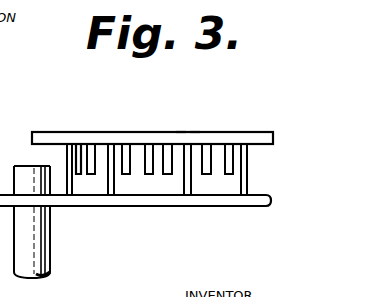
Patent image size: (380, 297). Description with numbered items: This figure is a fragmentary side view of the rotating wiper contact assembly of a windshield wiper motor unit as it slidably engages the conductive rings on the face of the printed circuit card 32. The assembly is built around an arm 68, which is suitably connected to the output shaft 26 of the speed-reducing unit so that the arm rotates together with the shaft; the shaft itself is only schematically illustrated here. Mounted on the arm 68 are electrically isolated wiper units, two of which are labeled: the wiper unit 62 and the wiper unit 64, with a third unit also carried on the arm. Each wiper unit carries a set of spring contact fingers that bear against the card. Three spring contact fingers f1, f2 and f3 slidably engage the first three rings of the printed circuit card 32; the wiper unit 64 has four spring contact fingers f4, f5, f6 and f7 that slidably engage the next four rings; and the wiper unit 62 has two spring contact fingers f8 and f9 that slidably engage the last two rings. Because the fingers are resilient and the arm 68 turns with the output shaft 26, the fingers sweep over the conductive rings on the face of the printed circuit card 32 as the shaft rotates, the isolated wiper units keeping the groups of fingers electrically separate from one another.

The output shaft 26 is at (49, 251).
The printed circuit card 32 is at (256, 132).
The wiper unit 62 is at (86, 186).
The wiper unit 64 is at (152, 185).
The arm 68 is at (255, 206).
The spring contact finger f1 is at (237, 132).
The spring contact finger f2 is at (221, 132).
The spring contact finger f3 is at (195, 132).
The spring contact finger f4 is at (180, 132).
The spring contact finger f5 is at (160, 132).
The spring contact finger f6 is at (141, 132).
The spring contact finger f7 is at (123, 132).
The spring contact finger f8 is at (98, 132).
The spring contact finger f9 is at (77, 132).